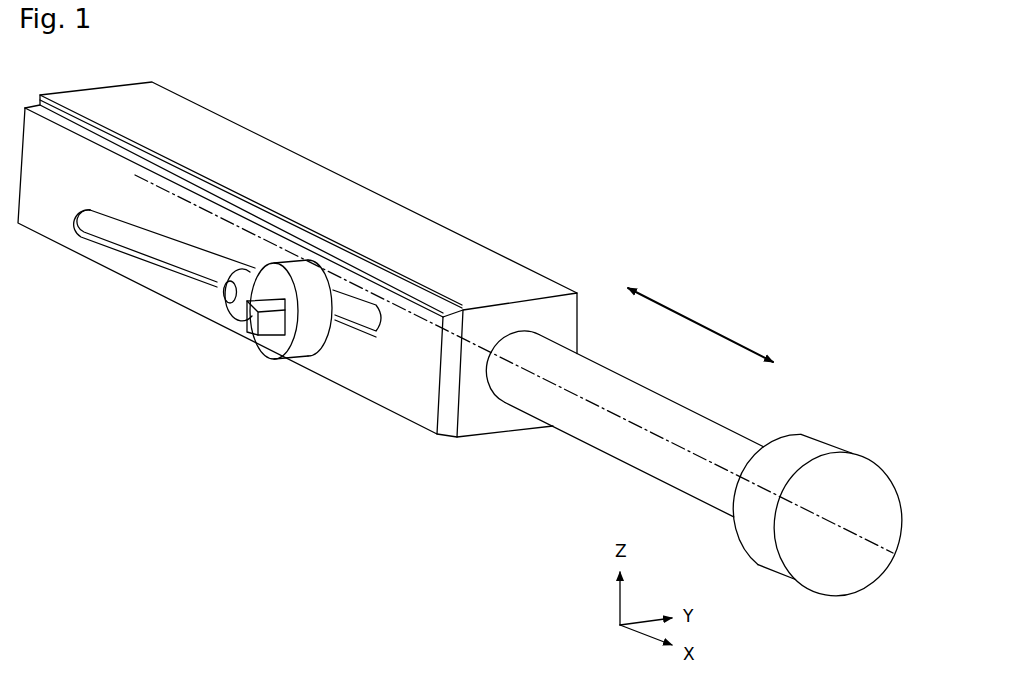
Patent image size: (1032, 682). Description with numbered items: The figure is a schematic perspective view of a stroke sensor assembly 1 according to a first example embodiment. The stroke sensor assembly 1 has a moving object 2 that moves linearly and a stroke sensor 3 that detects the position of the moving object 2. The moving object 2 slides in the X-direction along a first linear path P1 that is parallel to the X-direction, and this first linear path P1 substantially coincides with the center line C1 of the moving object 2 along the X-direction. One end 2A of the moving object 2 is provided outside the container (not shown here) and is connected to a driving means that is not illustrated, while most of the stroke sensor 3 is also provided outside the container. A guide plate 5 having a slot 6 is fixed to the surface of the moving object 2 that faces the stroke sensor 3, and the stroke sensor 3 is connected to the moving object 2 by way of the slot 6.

The stroke sensor assembly 1 is at (475, 344).
The moving object 2 is at (479, 344).
The one end 2A is at (830, 440).
The stroke sensor 3 is at (275, 348).
The guide plate 5 is at (418, 402).
The slot 6 is at (136, 255).
The center line C1 is at (343, 193).
The first linear path P1 is at (700, 325).